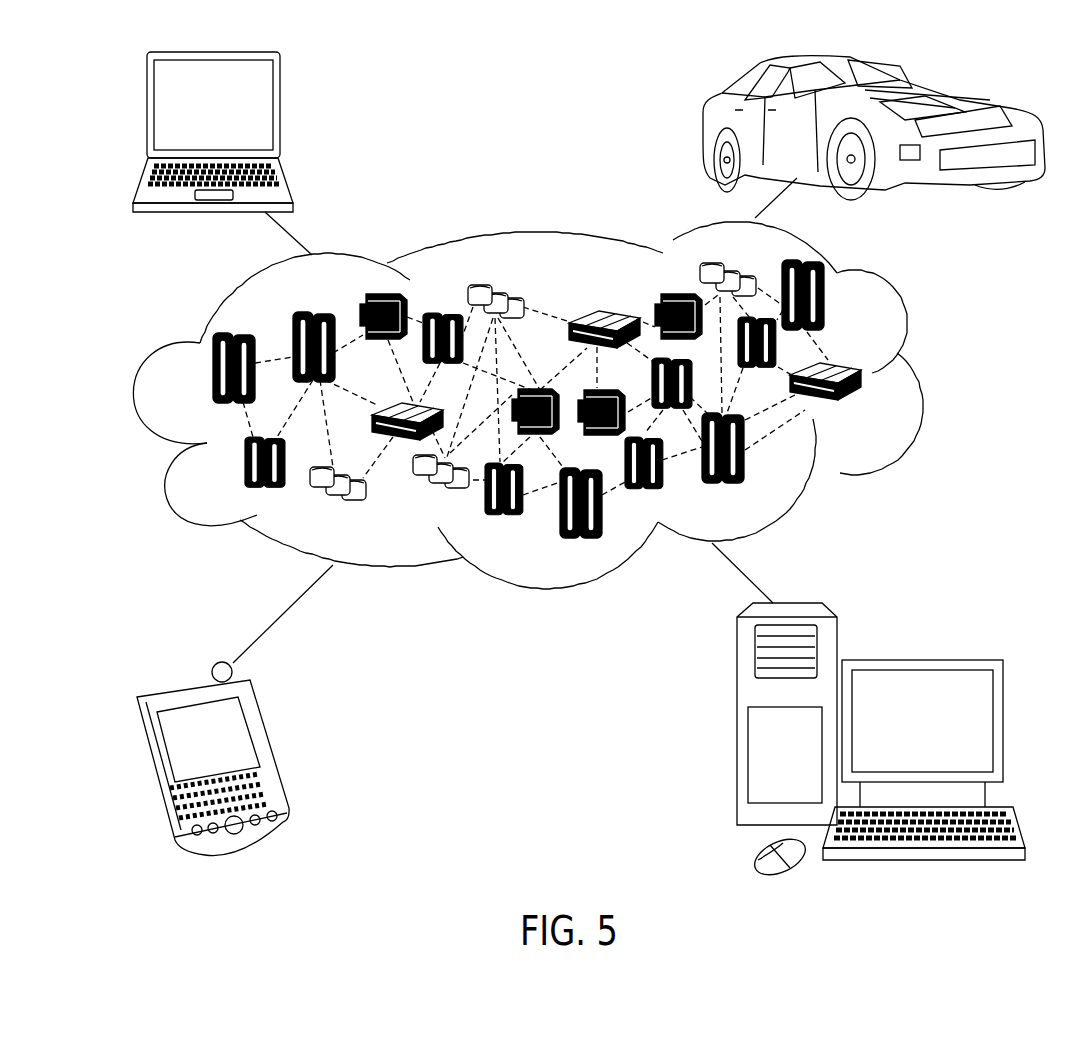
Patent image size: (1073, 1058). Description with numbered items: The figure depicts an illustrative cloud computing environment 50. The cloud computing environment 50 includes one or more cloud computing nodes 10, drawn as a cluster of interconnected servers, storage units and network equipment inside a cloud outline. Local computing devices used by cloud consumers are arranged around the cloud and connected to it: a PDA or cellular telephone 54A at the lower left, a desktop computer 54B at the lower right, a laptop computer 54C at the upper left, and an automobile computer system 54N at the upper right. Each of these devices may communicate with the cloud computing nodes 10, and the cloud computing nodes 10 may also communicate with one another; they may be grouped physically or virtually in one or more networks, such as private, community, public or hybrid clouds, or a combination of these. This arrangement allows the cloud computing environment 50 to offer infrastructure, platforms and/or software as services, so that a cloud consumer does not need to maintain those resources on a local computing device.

The cloud computing node 10 is at (872, 412).
The cloud computing environment 50 is at (555, 442).
The PDA or cellular telephone 54A is at (273, 752).
The desktop computer 54B is at (920, 658).
The laptop computer 54C is at (283, 113).
The automobile computer system 54N is at (703, 128).